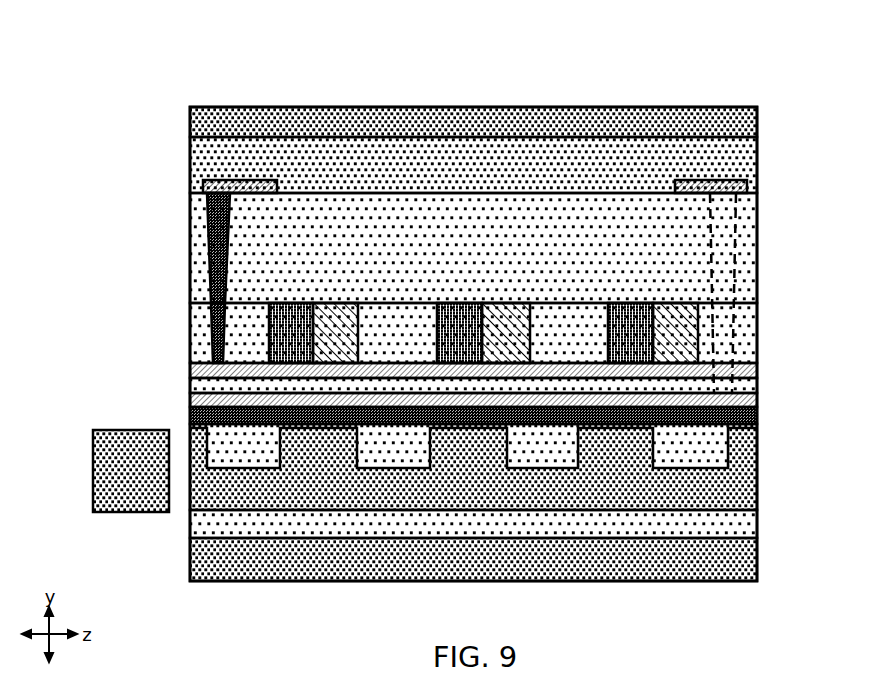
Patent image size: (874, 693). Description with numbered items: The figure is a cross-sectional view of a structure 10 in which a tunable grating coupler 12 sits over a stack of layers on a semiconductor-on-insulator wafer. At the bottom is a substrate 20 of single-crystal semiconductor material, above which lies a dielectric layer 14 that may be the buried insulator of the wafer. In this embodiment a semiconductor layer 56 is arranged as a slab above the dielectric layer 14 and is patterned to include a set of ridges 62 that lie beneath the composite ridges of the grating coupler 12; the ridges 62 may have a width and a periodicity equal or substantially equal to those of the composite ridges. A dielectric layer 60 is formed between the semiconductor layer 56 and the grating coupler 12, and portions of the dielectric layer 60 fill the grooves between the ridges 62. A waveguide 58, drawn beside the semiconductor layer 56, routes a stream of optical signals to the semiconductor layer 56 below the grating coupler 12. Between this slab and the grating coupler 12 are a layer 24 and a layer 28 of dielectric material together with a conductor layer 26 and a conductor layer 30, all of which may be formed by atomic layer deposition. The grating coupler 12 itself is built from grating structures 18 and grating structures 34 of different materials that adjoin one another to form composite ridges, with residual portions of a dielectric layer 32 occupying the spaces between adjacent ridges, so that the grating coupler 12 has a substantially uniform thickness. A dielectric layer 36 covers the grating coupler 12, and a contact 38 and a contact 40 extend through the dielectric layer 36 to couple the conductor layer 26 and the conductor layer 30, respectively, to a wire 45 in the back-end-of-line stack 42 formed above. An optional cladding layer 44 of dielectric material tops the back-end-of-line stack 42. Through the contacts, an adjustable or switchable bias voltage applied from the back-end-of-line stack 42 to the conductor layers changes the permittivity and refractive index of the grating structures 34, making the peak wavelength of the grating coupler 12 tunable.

The structure 10 is at (430, 302).
The grating coupler 12 is at (464, 208).
The dielectric layer 14 is at (740, 526).
The grating structures 18 is at (286, 313).
The substrate 20 is at (220, 563).
The layer 24 is at (210, 414).
The conductor layer 26 is at (747, 400).
The layer 28 is at (205, 387).
The conductor layer 30 is at (747, 372).
The dielectric layer 32 is at (745, 332).
The grating structures 34 is at (338, 338).
The dielectric layer 36 is at (197, 265).
The contact 38 is at (735, 217).
The contact 40 is at (208, 217).
The back-end-of-line stack 42 is at (735, 158).
The cladding layer 44 is at (213, 118).
The wire 45 is at (205, 181).
The semiconductor layer 56 is at (735, 486).
The waveguide 58 is at (108, 472).
The dielectric layer 60 is at (705, 449).
The ridges 62 is at (313, 448).